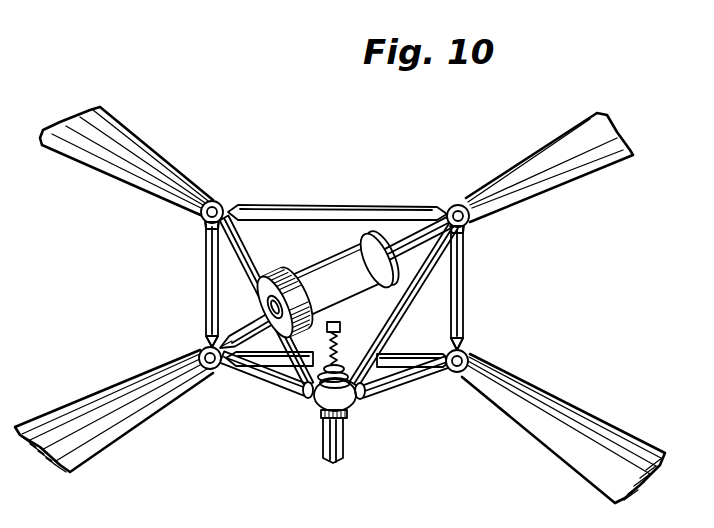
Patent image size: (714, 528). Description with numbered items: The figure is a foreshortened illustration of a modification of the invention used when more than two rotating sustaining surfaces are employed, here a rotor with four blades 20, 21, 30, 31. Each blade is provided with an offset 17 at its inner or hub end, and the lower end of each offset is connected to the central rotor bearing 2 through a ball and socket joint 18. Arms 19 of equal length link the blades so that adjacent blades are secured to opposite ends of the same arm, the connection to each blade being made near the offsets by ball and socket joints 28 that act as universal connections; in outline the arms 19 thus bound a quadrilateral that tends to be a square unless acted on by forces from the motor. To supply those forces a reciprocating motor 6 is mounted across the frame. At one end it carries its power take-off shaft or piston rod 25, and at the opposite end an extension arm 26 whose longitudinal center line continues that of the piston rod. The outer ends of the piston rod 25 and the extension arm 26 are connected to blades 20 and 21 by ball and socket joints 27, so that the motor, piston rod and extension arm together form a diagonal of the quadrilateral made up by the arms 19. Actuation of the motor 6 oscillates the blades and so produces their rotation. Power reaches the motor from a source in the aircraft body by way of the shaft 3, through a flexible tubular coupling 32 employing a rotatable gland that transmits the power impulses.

The rotor bearing 2 is at (322, 413).
The shaft 3 is at (345, 447).
The reciprocating motor 6 is at (342, 245).
The offset 17 is at (258, 388).
The ball and socket joint 18 is at (302, 397).
The arms 19 is at (294, 205).
The blade 20 is at (595, 181).
The blade 21 is at (80, 400).
The piston rod 25 is at (394, 248).
The extension arm 26 is at (220, 343).
The ball and socket joints 27 is at (455, 205).
The ball and socket joints 28 is at (228, 211).
The blade 30 is at (138, 130).
The blade 31 is at (622, 428).
The flexible tubular coupling 32 is at (348, 343).